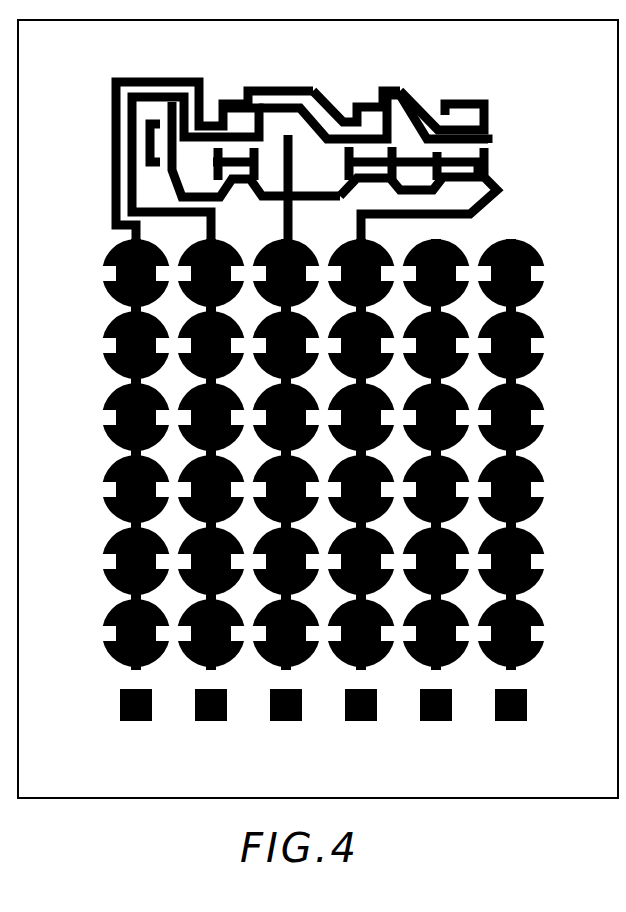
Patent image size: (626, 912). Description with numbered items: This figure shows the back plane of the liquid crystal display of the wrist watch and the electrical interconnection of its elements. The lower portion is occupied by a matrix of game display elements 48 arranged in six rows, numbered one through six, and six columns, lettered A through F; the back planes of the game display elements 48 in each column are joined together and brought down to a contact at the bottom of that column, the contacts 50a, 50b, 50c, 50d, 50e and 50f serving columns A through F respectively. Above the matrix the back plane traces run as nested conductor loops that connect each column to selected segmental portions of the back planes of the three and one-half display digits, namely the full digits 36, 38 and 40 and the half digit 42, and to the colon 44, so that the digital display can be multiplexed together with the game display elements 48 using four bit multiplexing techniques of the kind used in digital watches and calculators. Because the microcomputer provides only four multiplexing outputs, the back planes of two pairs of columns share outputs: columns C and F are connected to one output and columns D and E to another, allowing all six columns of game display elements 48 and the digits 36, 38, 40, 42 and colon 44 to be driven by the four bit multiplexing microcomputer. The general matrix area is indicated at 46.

The full display digit 36 is at (470, 100).
The full display digit 38 is at (362, 100).
The full display digit 40 is at (222, 98).
The one-half display digit 42 is at (160, 104).
The colon 44 is at (300, 178).
The contact matrix 46 is at (330, 435).
The game display elements 48 is at (455, 240).
The contact 50a is at (118, 694).
The contact 50b is at (193, 694).
The contact 50c is at (268, 694).
The contact 50d is at (343, 694).
The contact 50e is at (418, 694).
The contact 50f is at (493, 694).